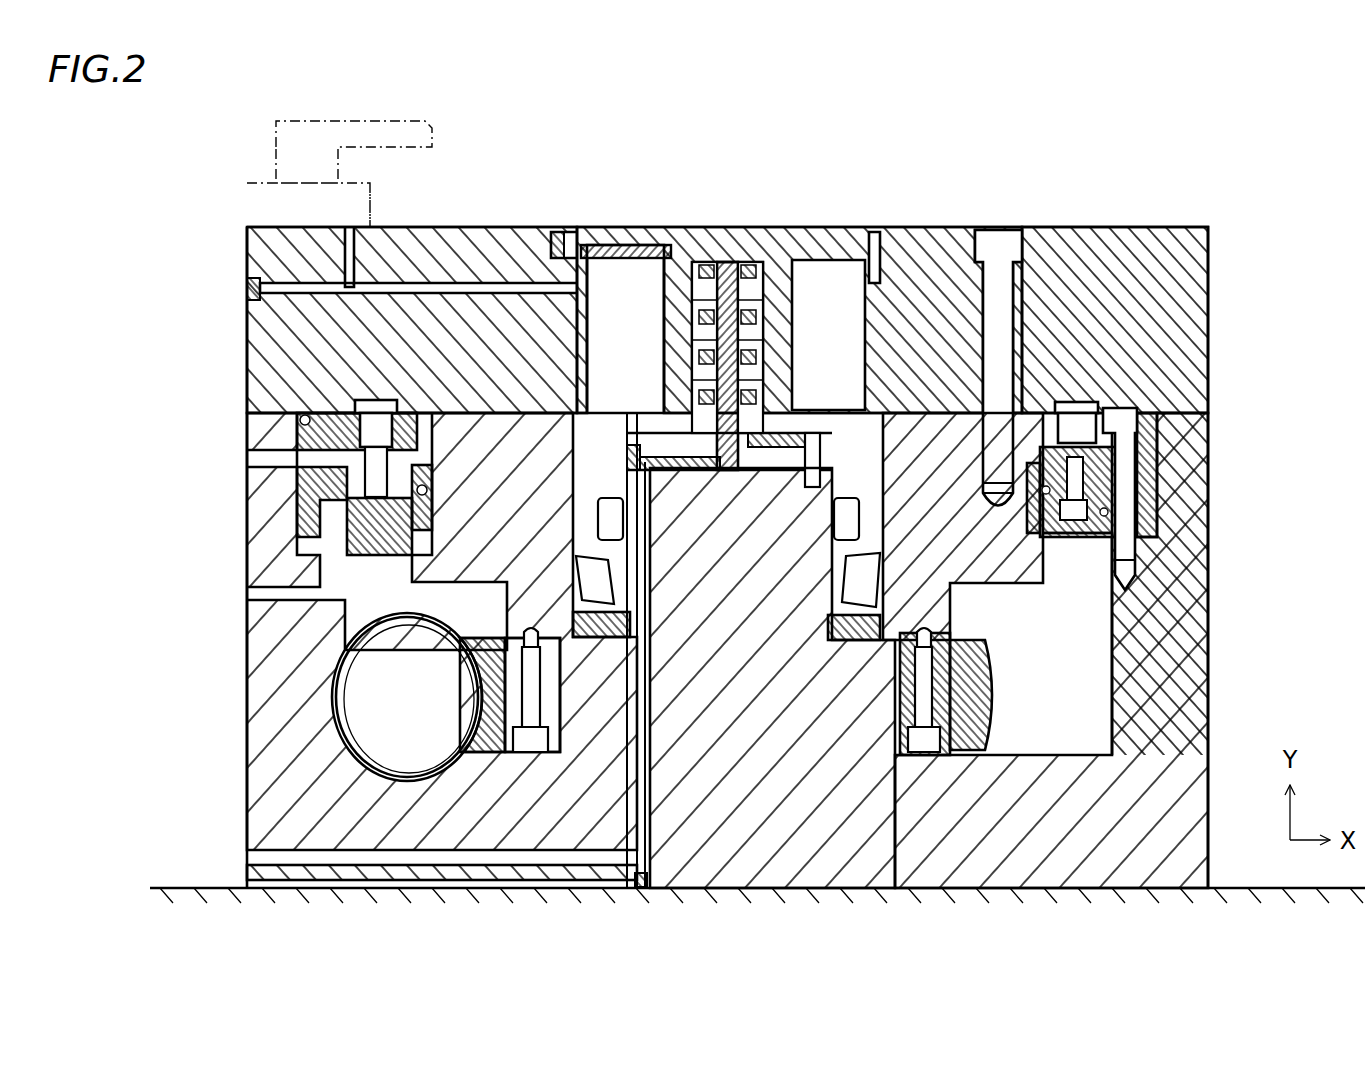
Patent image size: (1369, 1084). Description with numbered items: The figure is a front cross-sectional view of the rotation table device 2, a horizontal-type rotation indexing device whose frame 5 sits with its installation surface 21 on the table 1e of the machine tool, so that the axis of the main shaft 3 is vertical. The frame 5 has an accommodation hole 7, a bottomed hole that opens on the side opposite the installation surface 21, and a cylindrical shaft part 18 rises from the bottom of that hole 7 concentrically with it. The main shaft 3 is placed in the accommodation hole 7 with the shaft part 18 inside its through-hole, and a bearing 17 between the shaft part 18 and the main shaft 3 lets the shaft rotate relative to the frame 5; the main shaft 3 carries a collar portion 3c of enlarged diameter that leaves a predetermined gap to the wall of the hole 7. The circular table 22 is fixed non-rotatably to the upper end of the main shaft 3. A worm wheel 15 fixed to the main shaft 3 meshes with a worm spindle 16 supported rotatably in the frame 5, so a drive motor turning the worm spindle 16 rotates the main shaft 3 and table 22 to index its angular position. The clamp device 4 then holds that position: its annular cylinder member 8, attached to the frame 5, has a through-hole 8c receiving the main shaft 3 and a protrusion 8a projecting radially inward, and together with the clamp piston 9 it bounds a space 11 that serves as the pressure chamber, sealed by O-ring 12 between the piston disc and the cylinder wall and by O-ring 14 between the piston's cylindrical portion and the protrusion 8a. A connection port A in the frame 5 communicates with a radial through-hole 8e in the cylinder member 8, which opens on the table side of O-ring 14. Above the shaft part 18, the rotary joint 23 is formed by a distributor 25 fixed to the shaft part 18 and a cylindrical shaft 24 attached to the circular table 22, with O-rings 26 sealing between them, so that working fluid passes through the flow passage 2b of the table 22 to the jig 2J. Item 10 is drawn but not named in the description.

The rotation table device 2 is at (1225, 192).
The jig 2J is at (276, 130).
The flow passage 2b is at (280, 268).
The connection port A is at (247, 460).
The protrusion 8a is at (372, 405).
The through-hole 8e is at (408, 440).
The through-hole 8c is at (430, 490).
The O-ring 14 is at (492, 490).
The distributor 25 is at (612, 400).
The rotary joint 23 is at (700, 212).
The O-rings 26 is at (768, 280).
The cylindrical shaft 24 is at (815, 265).
The shaft part 18 is at (855, 560).
The bearing 17 is at (880, 478).
The circular table 22 is at (1210, 262).
The frame 5 is at (1210, 428).
The cylinder member 8 is at (1160, 470).
The space 11 is at (1150, 505).
The O-ring 12 is at (1137, 575).
The washer 10 is at (1112, 545).
The clamp piston 9 is at (1075, 537).
The clamp device 4 is at (1050, 540).
The collar portion 3c is at (1100, 578).
The main shaft 3 is at (990, 600).
The accommodation hole 7 is at (1100, 718).
The table 1e is at (240, 874).
The worm spindle 16 is at (410, 781).
The worm wheel 15 is at (490, 755).
The installation surface 21 is at (900, 892).